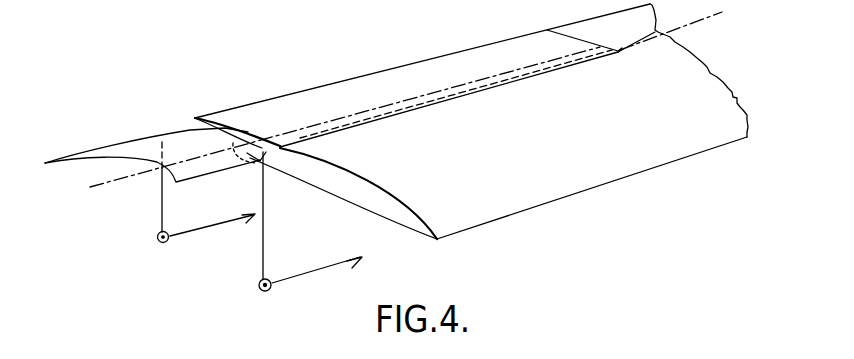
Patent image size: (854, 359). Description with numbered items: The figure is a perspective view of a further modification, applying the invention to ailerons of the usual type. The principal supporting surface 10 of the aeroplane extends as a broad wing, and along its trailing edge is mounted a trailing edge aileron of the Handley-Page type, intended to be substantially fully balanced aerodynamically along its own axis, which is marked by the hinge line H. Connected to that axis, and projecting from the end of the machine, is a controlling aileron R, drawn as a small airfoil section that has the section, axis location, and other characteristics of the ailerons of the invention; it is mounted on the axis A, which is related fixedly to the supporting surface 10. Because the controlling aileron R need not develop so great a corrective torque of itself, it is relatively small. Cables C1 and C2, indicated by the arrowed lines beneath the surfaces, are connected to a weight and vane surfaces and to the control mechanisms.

The principal supporting surface 10 is at (471, 121).
The hinge H is at (407, 75).
The controlling aileron R is at (170, 132).
The axis A is at (401, 100).
The cable C1 is at (317, 273).
The cable C2 is at (210, 228).